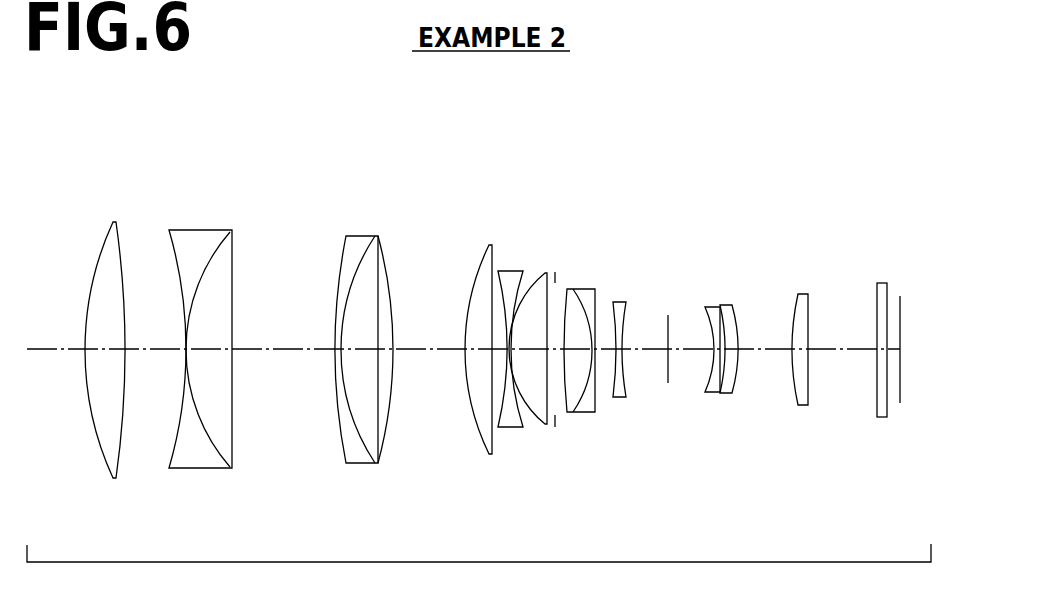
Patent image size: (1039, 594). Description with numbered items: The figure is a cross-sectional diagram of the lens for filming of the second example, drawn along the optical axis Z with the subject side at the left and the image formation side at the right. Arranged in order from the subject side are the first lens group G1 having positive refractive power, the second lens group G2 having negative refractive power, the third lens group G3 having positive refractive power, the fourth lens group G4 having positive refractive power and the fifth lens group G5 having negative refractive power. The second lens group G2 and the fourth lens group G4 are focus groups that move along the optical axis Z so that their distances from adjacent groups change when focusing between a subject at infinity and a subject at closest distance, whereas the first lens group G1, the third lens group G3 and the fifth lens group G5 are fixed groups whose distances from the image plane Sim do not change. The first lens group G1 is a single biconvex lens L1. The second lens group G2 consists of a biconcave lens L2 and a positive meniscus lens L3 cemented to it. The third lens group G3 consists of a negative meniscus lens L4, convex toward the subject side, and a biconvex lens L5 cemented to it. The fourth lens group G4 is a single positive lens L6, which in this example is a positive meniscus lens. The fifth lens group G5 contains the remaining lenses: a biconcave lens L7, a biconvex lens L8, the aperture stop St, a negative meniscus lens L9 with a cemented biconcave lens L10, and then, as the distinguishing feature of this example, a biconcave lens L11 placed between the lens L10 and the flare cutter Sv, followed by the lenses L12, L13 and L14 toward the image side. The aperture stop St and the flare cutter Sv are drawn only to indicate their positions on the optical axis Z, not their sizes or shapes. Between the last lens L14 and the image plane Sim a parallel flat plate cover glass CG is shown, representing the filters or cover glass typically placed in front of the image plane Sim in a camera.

The first lens group G1 is at (132, 131).
The second lens group G2 is at (245, 131).
The third lens group G3 is at (410, 131).
The fourth lens group G4 is at (480, 131).
The fifth lens group G5 is at (883, 131).
The biconvex lens L1 is at (114, 222).
The biconcave lens L2 is at (193, 230).
The positive meniscus lens L3 is at (230, 232).
The negative meniscus lens L4 is at (358, 238).
The biconvex lens L5 is at (374, 238).
The positive meniscus lens L6 is at (489, 245).
The biconcave lens L7 is at (513, 271).
The biconvex lens L8 is at (545, 273).
The negative meniscus lens L9 is at (568, 289).
The biconcave lens L10 is at (588, 289).
The biconcave lens L11 is at (625, 302).
The lens L12 is at (710, 307).
The lens L13 is at (722, 305).
The lens L14 is at (803, 294).
The aperture stop St is at (555, 427).
The flare cutter Sv is at (668, 383).
The cover glass CG is at (880, 283).
The image plane Sim is at (900, 300).
The optical axis Z is at (60, 347).